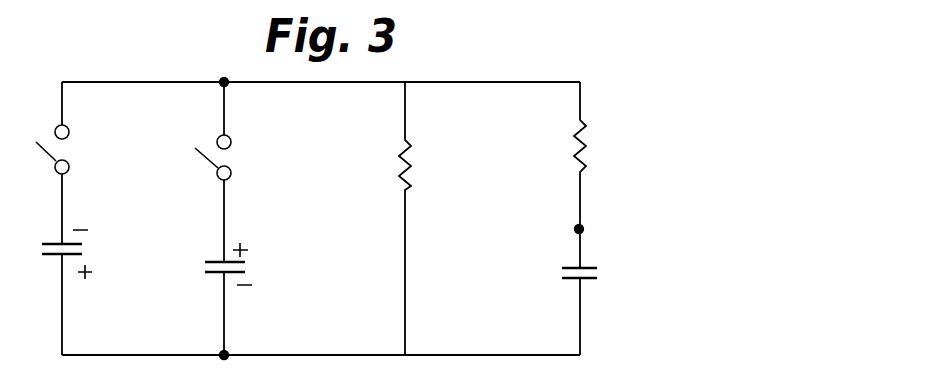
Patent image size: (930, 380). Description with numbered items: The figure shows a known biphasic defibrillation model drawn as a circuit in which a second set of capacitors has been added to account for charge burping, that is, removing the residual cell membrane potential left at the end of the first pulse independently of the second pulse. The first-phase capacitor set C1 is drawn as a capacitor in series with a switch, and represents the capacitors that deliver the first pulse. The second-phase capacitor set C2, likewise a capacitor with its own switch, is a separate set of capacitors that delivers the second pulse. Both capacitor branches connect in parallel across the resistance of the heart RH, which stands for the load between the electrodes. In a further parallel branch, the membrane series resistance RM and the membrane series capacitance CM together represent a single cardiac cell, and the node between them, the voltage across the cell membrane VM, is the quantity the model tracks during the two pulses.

The φ1 capacitor set C1 is at (50, 218).
The φ2 capacitor set C2 is at (212, 219).
The resistance of the heart RH is at (423, 218).
The membrane series resistance RM is at (598, 155).
The voltage across the cell membrane VM is at (597, 231).
The membrane series capacitance CM is at (598, 292).